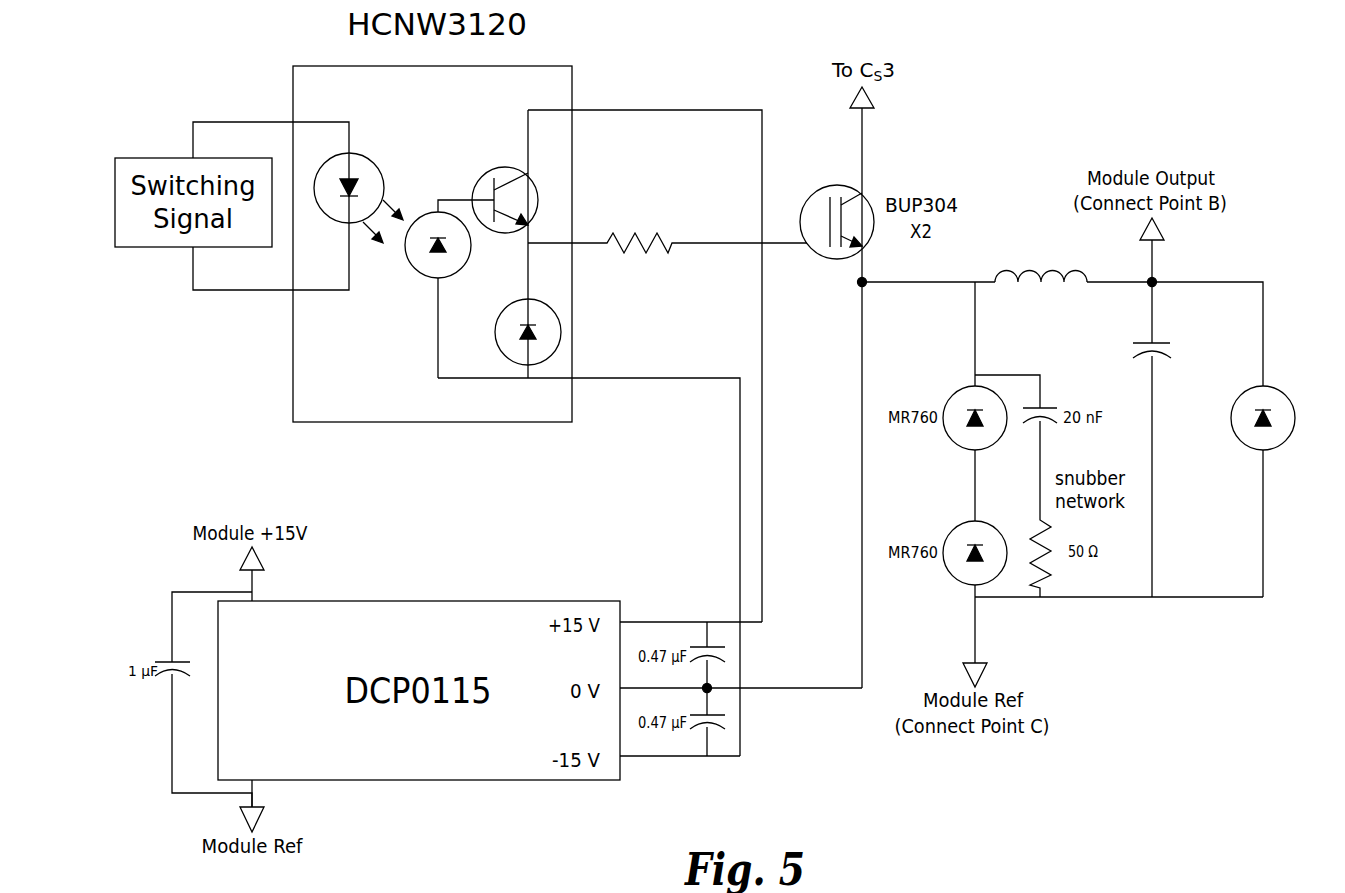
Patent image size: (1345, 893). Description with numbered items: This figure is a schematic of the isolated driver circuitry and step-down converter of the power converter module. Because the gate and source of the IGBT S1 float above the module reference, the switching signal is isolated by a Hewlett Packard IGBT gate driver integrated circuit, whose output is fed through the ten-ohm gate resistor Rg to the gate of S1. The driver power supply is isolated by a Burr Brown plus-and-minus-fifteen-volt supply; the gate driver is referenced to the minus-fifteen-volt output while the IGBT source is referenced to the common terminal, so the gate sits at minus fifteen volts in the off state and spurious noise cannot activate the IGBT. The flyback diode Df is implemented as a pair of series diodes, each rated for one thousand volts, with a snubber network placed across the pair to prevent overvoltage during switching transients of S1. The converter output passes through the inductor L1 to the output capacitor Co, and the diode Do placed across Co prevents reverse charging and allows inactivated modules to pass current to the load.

The IGBT switch S1 is at (837, 202).
The gate resistor Rg is at (667, 229).
The inductor L1 is at (1045, 292).
The output capacitor Co is at (1114, 351).
The diode Do is at (1226, 418).
The flyback diode Df is at (962, 485).